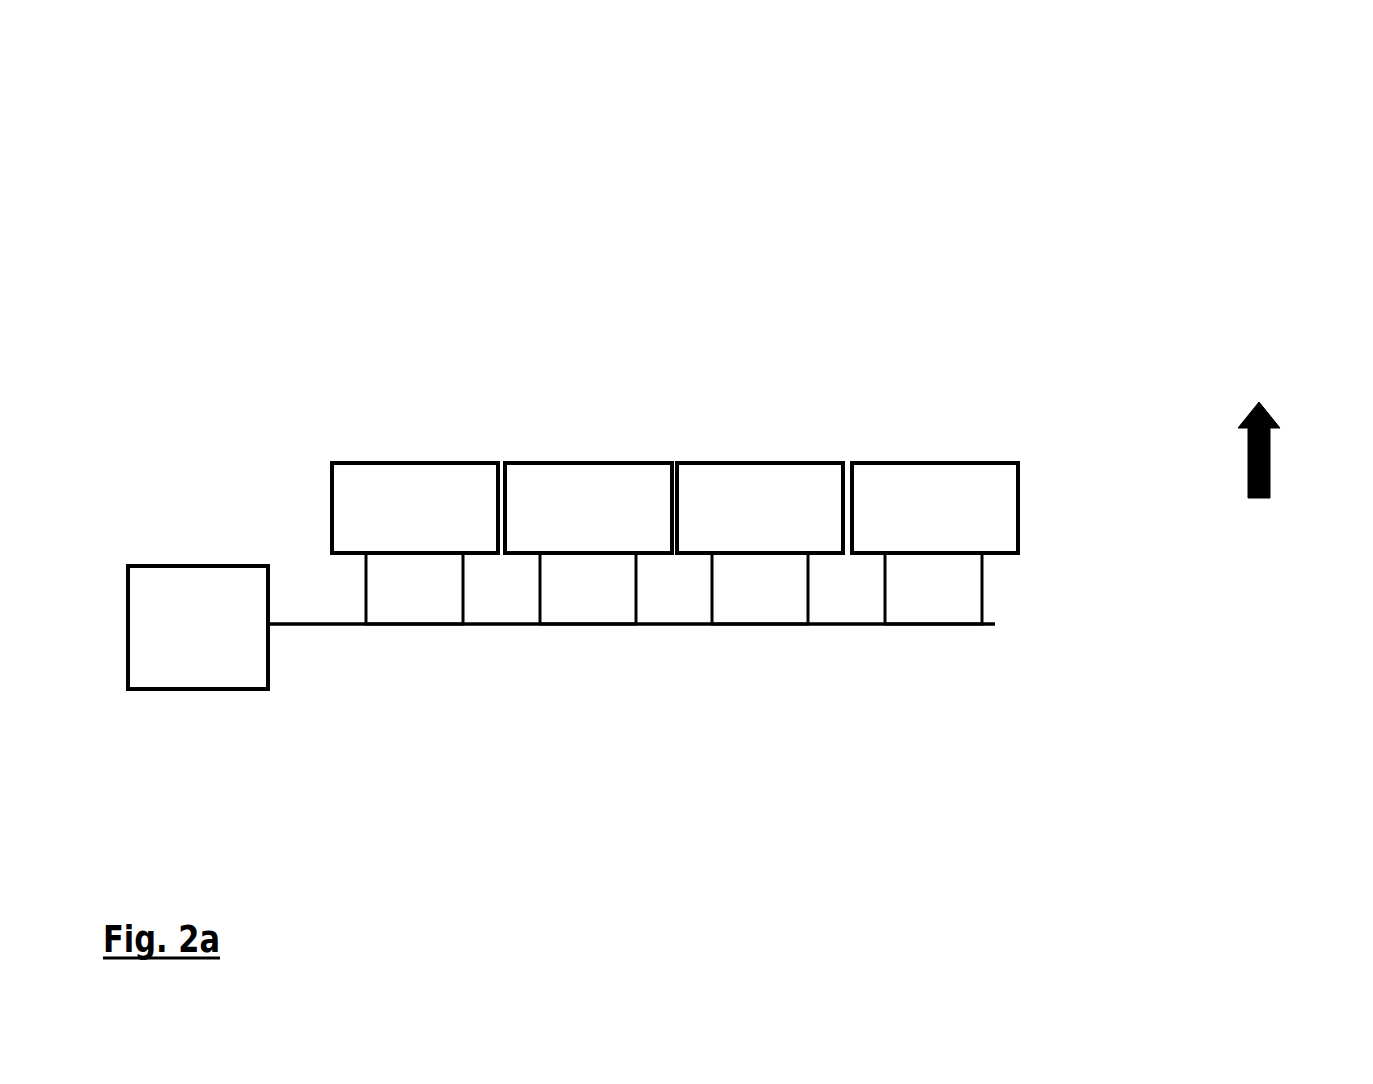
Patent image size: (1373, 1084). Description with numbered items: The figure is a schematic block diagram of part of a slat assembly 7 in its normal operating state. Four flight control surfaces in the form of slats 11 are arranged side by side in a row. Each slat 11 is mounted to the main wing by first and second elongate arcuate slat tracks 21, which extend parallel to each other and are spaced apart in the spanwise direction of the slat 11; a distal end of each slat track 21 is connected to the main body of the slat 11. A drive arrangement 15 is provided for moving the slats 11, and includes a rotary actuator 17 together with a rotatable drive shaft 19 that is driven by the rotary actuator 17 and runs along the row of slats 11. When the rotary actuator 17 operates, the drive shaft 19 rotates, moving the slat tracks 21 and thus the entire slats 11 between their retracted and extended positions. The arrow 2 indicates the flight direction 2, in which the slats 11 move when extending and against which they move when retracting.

The slat assembly 7 is at (353, 170).
The drive arrangement 15 is at (260, 509).
The slats 11 is at (412, 480).
The slat tracks 21 is at (540, 592).
The drive shaft 19 is at (313, 624).
The rotary actuator 17 is at (140, 592).
The flight direction 2 is at (366, 592).